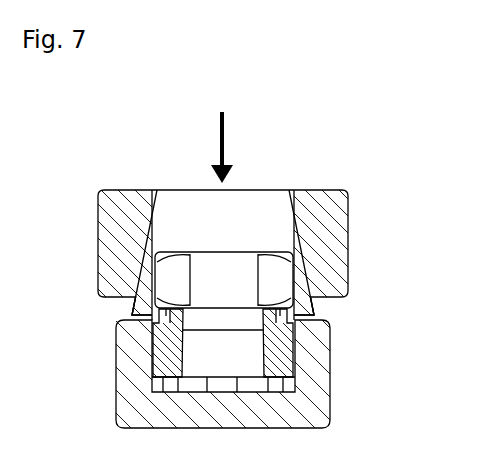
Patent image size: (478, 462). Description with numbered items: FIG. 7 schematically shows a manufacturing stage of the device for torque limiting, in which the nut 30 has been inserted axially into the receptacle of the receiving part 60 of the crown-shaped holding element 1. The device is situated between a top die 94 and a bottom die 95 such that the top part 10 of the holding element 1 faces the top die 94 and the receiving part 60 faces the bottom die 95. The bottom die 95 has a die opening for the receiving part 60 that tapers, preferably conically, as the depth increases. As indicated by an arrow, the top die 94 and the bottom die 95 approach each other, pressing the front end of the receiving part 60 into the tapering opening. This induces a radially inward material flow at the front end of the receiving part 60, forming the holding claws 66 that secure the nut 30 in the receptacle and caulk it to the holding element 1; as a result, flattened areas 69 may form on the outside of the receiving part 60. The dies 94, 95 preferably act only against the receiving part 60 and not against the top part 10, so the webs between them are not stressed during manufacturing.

The holding element 1 is at (251, 361).
The top part 10 is at (278, 348).
The nut 30 is at (265, 283).
The receiving part 60 is at (143, 297).
The holding claws 66 is at (152, 223).
The flattened areas 69 is at (134, 264).
The top die 94 is at (138, 368).
The bottom die 95 is at (122, 213).